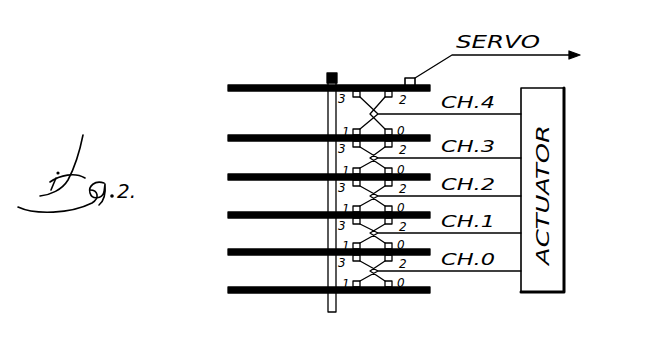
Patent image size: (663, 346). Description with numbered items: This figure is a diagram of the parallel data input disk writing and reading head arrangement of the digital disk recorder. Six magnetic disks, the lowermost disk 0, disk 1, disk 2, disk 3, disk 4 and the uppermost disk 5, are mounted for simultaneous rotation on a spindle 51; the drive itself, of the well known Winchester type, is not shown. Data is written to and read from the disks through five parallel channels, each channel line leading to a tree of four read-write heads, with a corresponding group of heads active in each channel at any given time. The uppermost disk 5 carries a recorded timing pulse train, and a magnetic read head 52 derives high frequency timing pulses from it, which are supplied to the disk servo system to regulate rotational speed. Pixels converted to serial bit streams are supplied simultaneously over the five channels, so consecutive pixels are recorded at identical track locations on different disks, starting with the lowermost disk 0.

The spindle 51 is at (332, 73).
The magnetic read head 52 is at (409, 77).
The uppermost magnetic disk 5 is at (228, 89).
The magnetic disk 4 is at (228, 138).
The magnetic disk 3 is at (228, 177).
The magnetic disk 2 is at (228, 215).
The magnetic disk 1 is at (228, 252).
The lowermost magnetic disk 0 is at (228, 290).